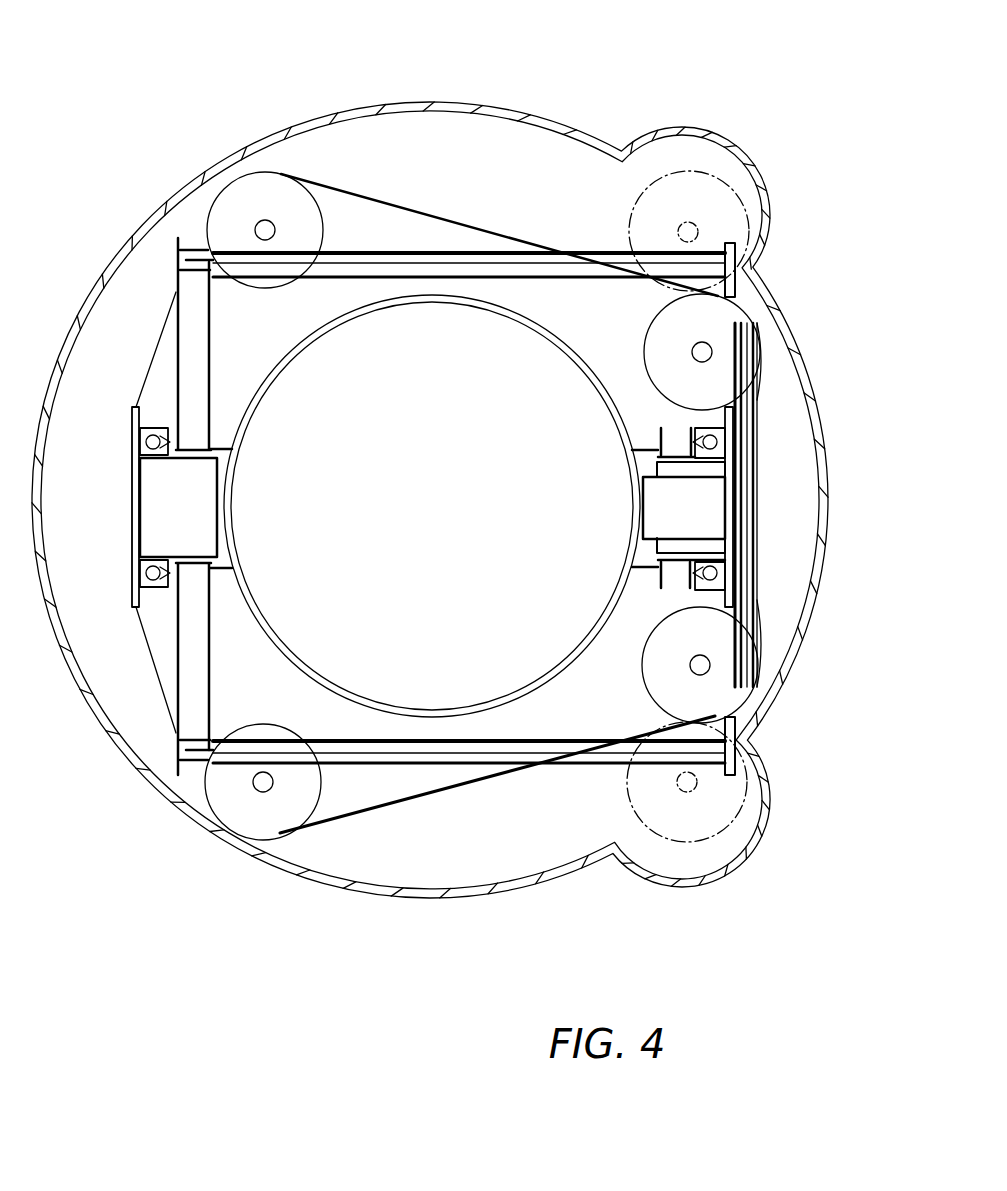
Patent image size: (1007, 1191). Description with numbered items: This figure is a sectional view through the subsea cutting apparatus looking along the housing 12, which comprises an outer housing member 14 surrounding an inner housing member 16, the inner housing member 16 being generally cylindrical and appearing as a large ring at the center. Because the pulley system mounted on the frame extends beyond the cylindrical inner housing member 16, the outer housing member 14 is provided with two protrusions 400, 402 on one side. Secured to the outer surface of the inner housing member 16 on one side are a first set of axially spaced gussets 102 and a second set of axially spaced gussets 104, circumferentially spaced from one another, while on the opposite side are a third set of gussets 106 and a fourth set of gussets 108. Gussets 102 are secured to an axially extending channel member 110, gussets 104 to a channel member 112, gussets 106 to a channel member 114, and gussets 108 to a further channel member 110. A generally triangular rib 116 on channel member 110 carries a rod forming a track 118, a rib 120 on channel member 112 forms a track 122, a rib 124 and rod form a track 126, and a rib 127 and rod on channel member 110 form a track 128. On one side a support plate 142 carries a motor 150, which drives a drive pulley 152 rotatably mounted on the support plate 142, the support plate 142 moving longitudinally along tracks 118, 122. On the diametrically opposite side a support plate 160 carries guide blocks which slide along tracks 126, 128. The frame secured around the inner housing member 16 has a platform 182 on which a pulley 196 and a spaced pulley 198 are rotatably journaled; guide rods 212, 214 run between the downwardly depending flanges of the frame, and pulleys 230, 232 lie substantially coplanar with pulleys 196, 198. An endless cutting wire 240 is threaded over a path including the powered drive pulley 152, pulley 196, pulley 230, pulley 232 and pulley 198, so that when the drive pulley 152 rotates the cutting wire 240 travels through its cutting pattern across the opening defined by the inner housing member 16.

The housing 12 is at (334, 78).
The outer housing member 14 is at (545, 112).
The inner housing member 16 is at (495, 315).
The first set of axially spaced gussets 102 is at (647, 574).
The second set of axially spaced gussets 104 is at (632, 448).
The third set of axially spaced gussets 106 is at (232, 582).
The fourth set of axially spaced gussets 108 is at (237, 448).
The channel member 110 is at (207, 430).
The channel member 112 is at (670, 466).
The channel member 114 is at (195, 555).
The rib 116 is at (715, 557).
The track 118 is at (716, 578).
The rib 120 is at (726, 410).
The track 122 is at (715, 442).
The rib 124 is at (163, 575).
The track 126 is at (140, 575).
The rib 127 is at (160, 432).
The track 128 is at (140, 440).
The support plate 142 is at (731, 518).
The motor 150 is at (665, 515).
The drive pulley 152 is at (757, 483).
The support plate 160 is at (132, 500).
The platform 182 is at (270, 335).
The pulley 196 is at (712, 698).
The pulley 198 is at (722, 320).
The second guide rod 212 is at (450, 763).
The guide rod 214 is at (442, 258).
The pulley 230 is at (222, 800).
The pulley 232 is at (240, 195).
The endless cutting wire 240 is at (355, 818).
The protrusion 400 is at (745, 150).
The protrusion 402 is at (755, 852).